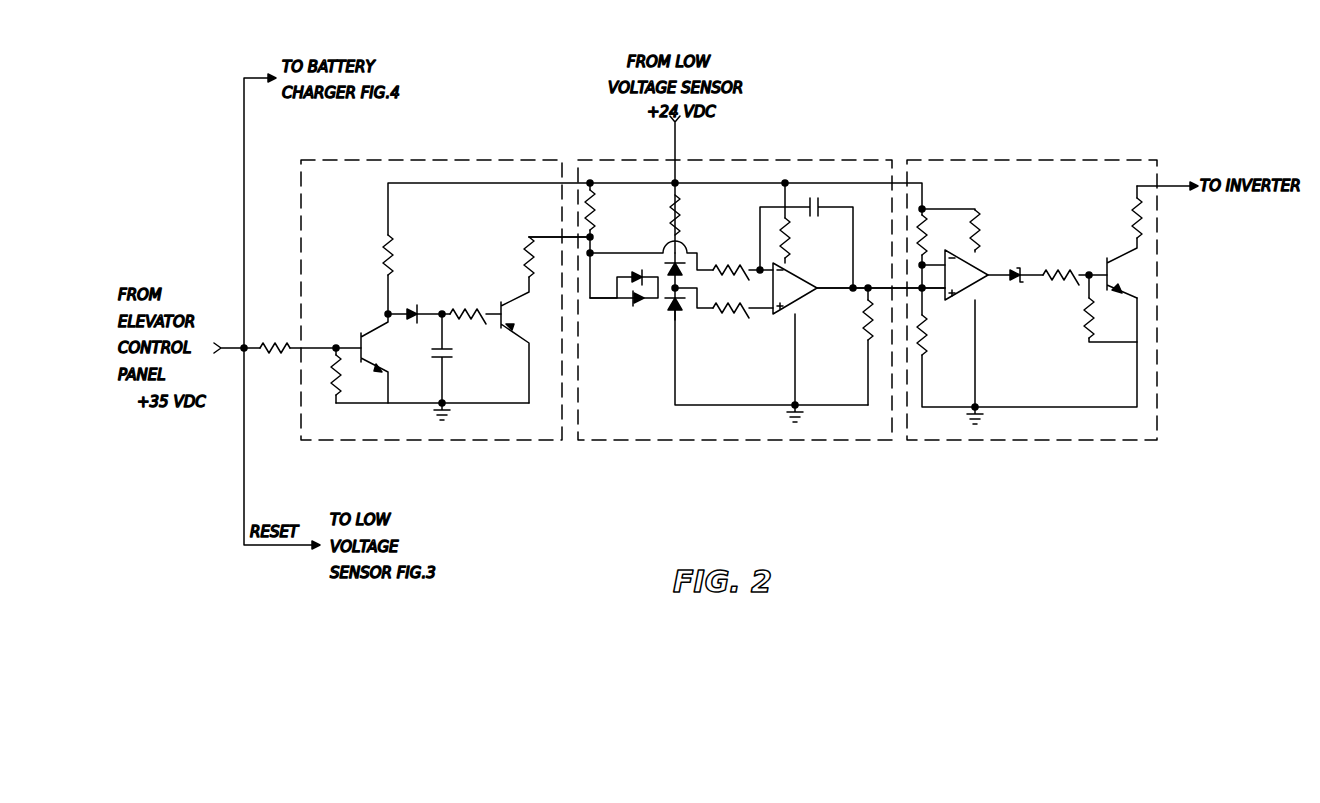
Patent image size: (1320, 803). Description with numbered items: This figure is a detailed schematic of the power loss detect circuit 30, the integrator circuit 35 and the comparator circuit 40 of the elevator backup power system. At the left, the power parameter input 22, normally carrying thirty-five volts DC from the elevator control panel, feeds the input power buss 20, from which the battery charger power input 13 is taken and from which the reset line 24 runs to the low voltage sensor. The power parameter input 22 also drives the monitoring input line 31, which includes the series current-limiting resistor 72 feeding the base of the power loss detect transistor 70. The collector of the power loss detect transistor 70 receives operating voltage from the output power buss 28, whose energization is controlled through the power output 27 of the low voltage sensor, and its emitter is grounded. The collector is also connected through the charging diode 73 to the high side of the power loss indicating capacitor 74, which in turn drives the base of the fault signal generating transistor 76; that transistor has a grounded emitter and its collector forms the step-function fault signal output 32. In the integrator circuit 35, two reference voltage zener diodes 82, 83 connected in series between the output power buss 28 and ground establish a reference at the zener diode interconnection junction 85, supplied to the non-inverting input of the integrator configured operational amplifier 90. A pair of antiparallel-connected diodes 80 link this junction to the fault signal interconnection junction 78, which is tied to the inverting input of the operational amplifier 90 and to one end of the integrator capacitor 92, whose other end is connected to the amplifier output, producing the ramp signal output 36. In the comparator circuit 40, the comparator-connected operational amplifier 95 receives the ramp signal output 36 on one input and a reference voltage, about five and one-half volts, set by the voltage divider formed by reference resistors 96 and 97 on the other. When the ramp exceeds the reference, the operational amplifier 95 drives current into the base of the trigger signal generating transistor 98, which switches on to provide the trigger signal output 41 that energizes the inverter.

The battery charger power input 13 is at (262, 76).
The input power buss 20 is at (244, 467).
The power parameter input 22 is at (240, 346).
The reset line 24 is at (247, 549).
The power output 27 is at (675, 152).
The output power buss 28 is at (571, 175).
The power loss detect circuit 30 is at (465, 440).
The monitoring input line 31 is at (302, 375).
The fault signal output 32 is at (560, 236).
The integrator circuit 35 is at (783, 440).
The ramp signal output 36 is at (886, 285).
The comparator circuit 40 is at (1053, 440).
The trigger signal output 41 is at (1165, 190).
The power loss detect transistor 70 is at (359, 343).
The current-limiting resistor 72 is at (280, 340).
The charging diode 73 is at (415, 309).
The power loss indicating capacitor 74 is at (447, 360).
The fault signal generating transistor 76 is at (497, 304).
The fault signal interconnection junction 78 is at (594, 239).
The antiparallel-connected diodes 80 is at (627, 306).
The reference voltage zener diode 82 is at (667, 262).
The reference voltage zener diode 83 is at (668, 304).
The zener diode interconnection junction 85 is at (702, 265).
The integrator configured operational amplifier 90 is at (791, 263).
The integrator capacitor 92 is at (817, 218).
The comparator-connected operational amplifier 95 is at (984, 268).
The reference resistor 96 is at (927, 224).
The reference resistor 97 is at (928, 324).
The trigger signal generating transistor 98 is at (1100, 262).